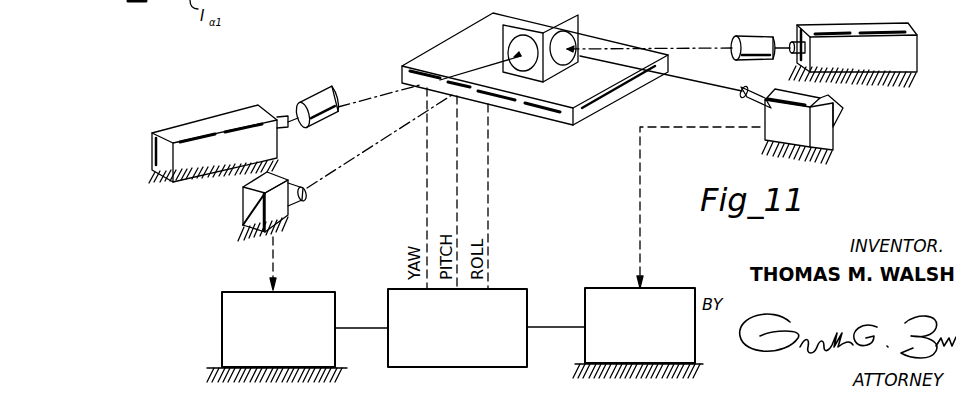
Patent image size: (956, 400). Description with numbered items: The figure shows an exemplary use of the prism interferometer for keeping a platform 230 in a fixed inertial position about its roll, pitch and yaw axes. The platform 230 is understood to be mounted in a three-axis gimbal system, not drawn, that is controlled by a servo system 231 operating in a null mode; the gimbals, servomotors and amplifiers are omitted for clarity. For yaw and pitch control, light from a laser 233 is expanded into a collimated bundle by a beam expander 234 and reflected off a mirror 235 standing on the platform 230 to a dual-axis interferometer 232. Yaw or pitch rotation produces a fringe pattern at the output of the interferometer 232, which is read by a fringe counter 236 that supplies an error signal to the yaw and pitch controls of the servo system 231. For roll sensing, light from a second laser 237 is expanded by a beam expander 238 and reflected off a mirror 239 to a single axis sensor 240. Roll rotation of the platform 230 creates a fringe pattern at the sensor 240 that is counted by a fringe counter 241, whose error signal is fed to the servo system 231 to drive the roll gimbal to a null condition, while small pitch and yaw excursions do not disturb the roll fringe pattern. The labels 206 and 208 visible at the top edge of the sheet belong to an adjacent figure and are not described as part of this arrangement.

The reference from adjacent figure 206 is at (271, 0).
The reference from adjacent figure 208 is at (427, 0).
The platform 230 is at (438, 52).
The servo system 231 is at (544, 274).
The dual-axis interferometer 232 is at (243, 204).
The laser 233 is at (228, 113).
The beam expander 234 is at (335, 100).
The mirror 235 is at (503, 43).
The fringe counter 236 is at (297, 290).
The laser 237 is at (847, 23).
The beam expander 238 is at (735, 35).
The mirror 239 is at (580, 30).
The single axis sensor 240 is at (833, 133).
The fringe counter 241 is at (661, 288).